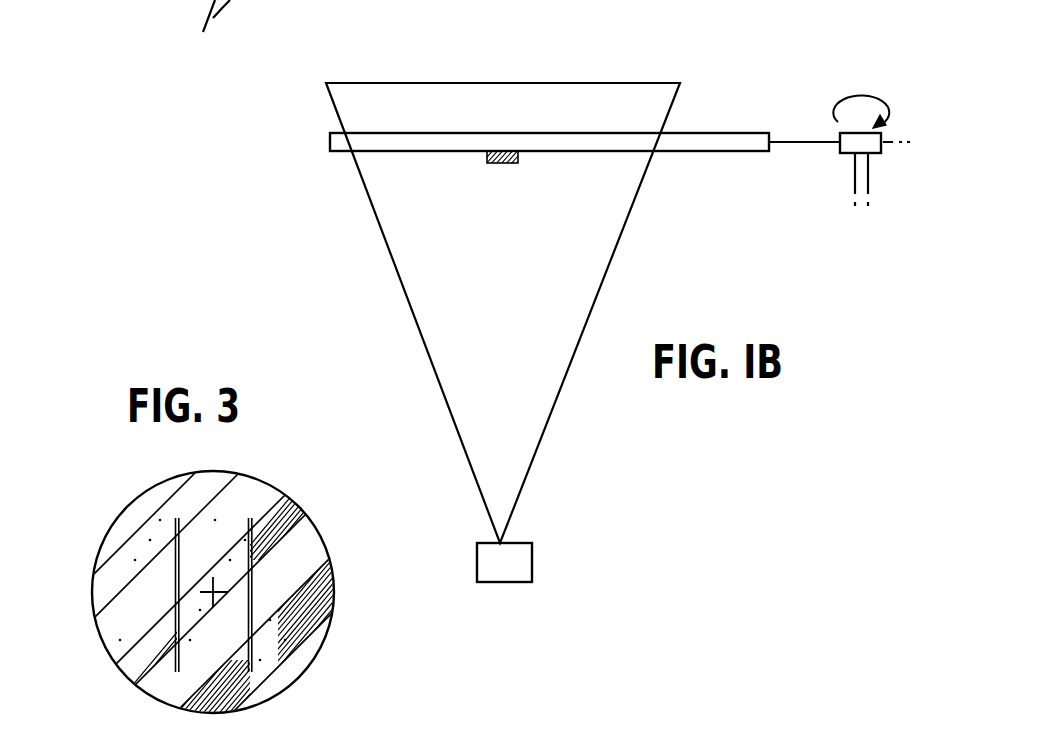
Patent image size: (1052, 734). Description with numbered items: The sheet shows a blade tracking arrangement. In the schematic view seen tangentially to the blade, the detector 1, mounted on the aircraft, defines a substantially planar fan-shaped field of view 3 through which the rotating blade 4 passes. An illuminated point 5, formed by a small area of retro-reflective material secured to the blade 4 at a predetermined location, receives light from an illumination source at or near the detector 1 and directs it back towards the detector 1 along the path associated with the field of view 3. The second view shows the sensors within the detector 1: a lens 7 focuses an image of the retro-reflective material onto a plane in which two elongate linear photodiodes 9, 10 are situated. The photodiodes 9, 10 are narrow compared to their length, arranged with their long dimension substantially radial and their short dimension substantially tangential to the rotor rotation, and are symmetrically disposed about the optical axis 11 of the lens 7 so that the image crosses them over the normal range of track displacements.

In FIG. 1B, the detector 1 is at (533, 545).
In FIG. 1B, the field of view 3 is at (393, 262).
In FIG. 1B, the rotating blade 4 is at (418, 143).
In FIG. 1B, the illuminated point 5 is at (497, 165).
In FIG. 3, the lens 7 is at (273, 503).
In FIG. 3, the elongate linear photodiode 9 is at (177, 600).
In FIG. 3, the elongate linear photodiode 10 is at (253, 610).
In FIG. 3, the optical axis 11 is at (212, 590).